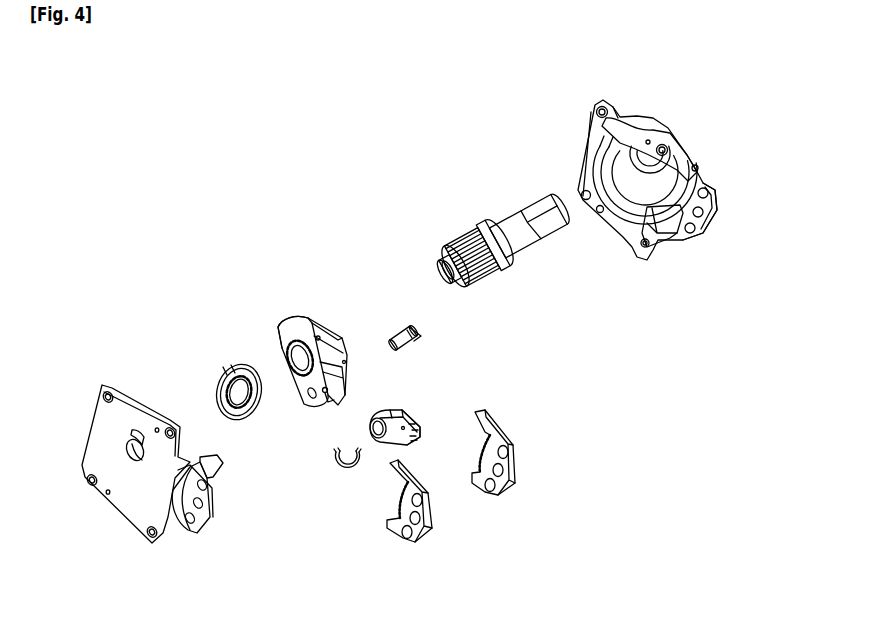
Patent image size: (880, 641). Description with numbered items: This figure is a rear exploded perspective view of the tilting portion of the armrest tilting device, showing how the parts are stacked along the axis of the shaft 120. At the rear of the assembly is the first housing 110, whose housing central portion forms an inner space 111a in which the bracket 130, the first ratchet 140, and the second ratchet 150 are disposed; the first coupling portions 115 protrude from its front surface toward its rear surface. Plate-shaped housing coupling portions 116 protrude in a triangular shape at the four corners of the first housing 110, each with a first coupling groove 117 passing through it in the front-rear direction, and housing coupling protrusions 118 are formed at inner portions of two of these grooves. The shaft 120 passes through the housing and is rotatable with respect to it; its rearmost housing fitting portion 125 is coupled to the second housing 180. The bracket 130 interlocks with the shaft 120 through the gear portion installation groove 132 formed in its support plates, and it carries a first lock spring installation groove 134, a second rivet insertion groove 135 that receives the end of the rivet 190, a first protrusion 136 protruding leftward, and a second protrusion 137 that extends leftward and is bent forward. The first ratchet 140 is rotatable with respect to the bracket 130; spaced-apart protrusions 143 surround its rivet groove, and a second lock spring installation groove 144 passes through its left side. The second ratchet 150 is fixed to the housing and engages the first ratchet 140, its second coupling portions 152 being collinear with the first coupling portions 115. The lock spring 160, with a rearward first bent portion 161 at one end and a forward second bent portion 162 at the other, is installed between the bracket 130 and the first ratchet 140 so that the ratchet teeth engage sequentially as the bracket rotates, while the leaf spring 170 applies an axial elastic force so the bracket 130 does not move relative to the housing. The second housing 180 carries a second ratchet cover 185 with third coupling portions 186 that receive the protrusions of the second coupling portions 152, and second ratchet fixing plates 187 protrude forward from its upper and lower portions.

The first housing 110 is at (664, 102).
The inner space 111a is at (675, 240).
The first coupling portions 115 is at (715, 207).
The housing coupling portions 116 is at (606, 102).
The first coupling groove 117 is at (597, 110).
The housing coupling protrusions 118 is at (650, 146).
The shaft 120 is at (470, 224).
The housing fitting portion 125 is at (451, 283).
The bracket 130 is at (281, 312).
The gear portion installation groove 132 is at (278, 356).
The first lock spring installation groove 134 is at (324, 394).
The second rivet insertion groove 135 is at (309, 399).
The first protrusion 136 is at (343, 350).
The second protrusion 137 is at (314, 338).
The first ratchet 140 is at (404, 413).
The spaced-apart protrusions 143 is at (374, 417).
The second lock spring installation groove 144 is at (420, 420).
The second ratchet 150 is at (503, 418).
The second coupling portions 152 is at (513, 462).
The lock spring 160 is at (346, 521).
The first bent portion 161 is at (337, 456).
The second bent portion 162 is at (358, 457).
The leaf spring 170 is at (218, 352).
The second housing 180 is at (102, 381).
The second ratchet cover 185 is at (210, 516).
The third coupling portions 186 is at (210, 500).
The second ratchet fixing plates 187 is at (222, 470).
The rivet 190 is at (395, 322).